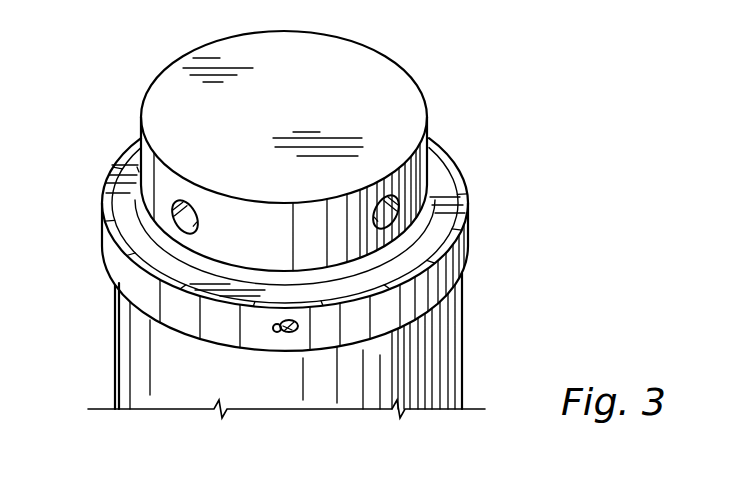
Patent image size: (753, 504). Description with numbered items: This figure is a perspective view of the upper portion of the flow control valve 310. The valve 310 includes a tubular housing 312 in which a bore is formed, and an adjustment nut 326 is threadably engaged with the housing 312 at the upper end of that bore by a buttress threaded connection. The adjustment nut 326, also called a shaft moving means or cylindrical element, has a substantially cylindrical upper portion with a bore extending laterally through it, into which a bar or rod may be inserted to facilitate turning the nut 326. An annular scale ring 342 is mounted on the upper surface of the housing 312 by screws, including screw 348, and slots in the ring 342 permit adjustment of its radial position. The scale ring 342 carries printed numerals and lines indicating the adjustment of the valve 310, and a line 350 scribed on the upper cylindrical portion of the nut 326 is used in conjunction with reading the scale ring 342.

The flow control valve 310 is at (528, 134).
The tubular housing 312 is at (137, 335).
The adjustment nut 326 is at (421, 89).
The annular scale ring 342 is at (107, 183).
The screw 348 is at (283, 335).
The line 350 is at (137, 167).